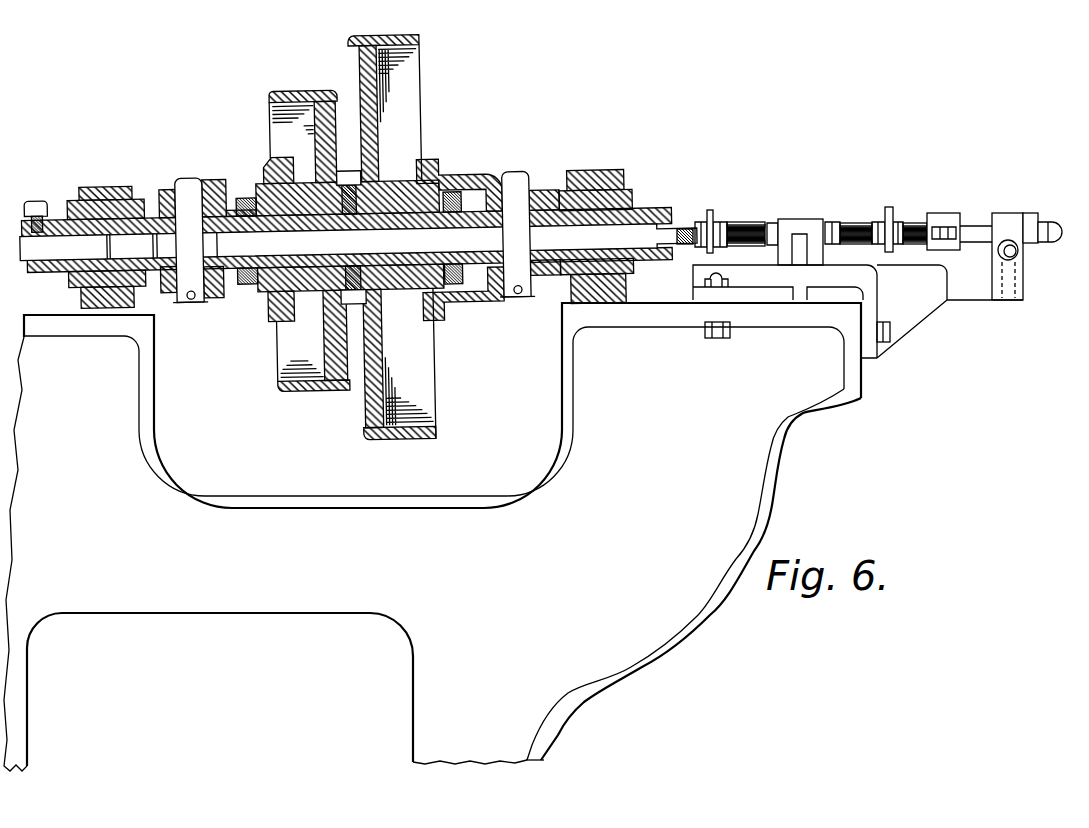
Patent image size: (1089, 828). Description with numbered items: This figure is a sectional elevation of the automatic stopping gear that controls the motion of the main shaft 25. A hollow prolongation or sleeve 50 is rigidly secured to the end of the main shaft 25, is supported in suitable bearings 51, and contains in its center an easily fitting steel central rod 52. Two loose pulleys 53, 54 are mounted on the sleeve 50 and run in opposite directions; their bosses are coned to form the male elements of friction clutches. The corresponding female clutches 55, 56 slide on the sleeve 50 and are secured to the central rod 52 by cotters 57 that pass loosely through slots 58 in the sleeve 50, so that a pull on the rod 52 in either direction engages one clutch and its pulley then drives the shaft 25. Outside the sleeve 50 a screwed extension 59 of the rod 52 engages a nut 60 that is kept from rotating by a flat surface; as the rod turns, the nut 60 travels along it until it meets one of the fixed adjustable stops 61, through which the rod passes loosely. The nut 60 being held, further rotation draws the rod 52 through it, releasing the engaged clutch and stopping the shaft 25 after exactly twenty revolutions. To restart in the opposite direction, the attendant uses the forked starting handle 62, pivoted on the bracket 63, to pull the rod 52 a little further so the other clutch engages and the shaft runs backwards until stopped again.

The main shaft 25 is at (47, 240).
The sleeve 50 is at (59, 216).
The bearings 51 is at (97, 184).
The central rod 52 is at (322, 292).
The loose pulley 53 is at (305, 92).
The loose pulley 54 is at (400, 98).
The female clutch 55 is at (258, 183).
The female clutch 56 is at (445, 178).
The cotters 57 is at (190, 178).
The slots 58 is at (180, 302).
The extension 59 is at (770, 222).
The nut 60 is at (858, 220).
The fixed adjustable stops 61 is at (711, 212).
The forked starting handle 62 is at (1019, 253).
The bracket 63 is at (1000, 302).